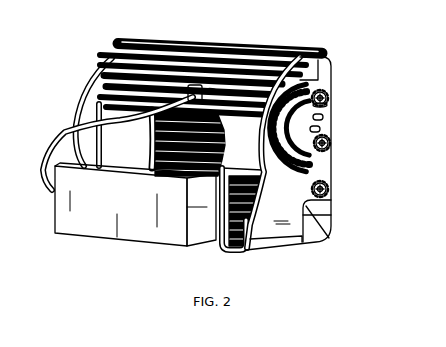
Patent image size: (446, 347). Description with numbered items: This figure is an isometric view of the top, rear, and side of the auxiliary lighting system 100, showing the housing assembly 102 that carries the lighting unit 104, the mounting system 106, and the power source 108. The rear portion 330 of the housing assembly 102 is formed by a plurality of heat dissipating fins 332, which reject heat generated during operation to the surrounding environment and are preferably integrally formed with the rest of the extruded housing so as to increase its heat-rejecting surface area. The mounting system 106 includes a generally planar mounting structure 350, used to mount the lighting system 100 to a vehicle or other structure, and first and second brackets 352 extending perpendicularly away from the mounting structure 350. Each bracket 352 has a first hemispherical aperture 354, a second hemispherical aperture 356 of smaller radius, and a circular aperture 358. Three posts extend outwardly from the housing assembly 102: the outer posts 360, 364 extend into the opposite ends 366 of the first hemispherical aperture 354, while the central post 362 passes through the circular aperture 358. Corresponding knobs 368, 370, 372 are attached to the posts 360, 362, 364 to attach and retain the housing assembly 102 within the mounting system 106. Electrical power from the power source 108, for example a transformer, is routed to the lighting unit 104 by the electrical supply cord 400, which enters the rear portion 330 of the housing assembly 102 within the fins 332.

The auxiliary lighting system 100 is at (350, 252).
The housing assembly 102 is at (276, 47).
The lighting unit 104 is at (351, 70).
The mounting system 106 is at (273, 249).
The power source 108 is at (80, 226).
The rear portion 330 is at (88, 60).
The heat dissipating fins 332 is at (172, 58).
The mounting structure 350 is at (255, 251).
The brackets 352 is at (333, 228).
The first hemispherical aperture 354 is at (320, 178).
The second hemispherical aperture 356 is at (323, 118).
The circular aperture 358 is at (320, 131).
The outer post 360 is at (329, 94).
The central post 362 is at (333, 151).
The outer post 364 is at (330, 208).
The opposite ends 366 is at (319, 70).
The knob 368 is at (329, 101).
The knob 370 is at (330, 143).
The knob 372 is at (329, 189).
The electrical supply cord 400 is at (66, 121).